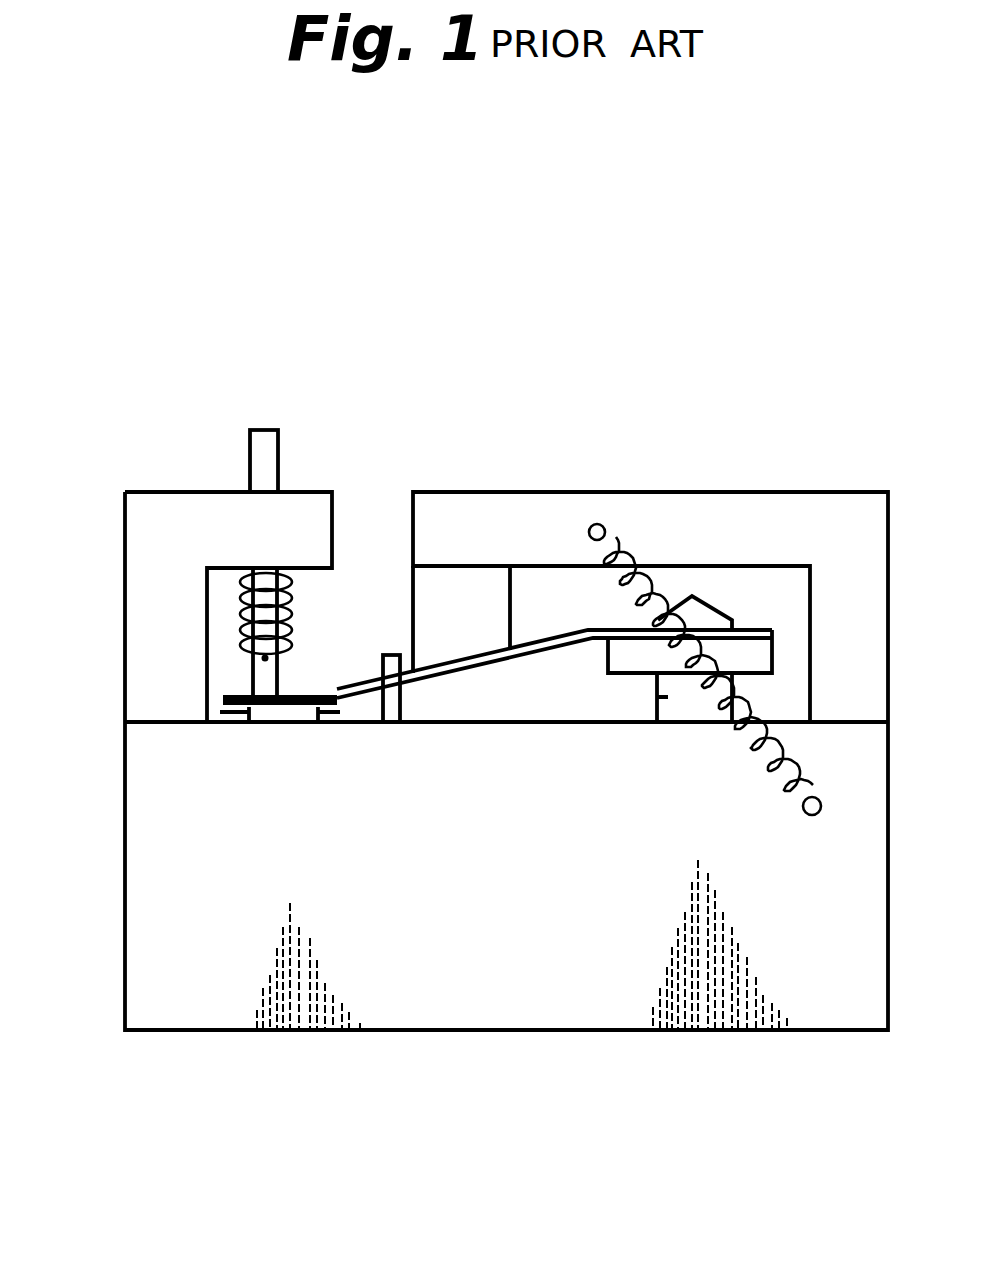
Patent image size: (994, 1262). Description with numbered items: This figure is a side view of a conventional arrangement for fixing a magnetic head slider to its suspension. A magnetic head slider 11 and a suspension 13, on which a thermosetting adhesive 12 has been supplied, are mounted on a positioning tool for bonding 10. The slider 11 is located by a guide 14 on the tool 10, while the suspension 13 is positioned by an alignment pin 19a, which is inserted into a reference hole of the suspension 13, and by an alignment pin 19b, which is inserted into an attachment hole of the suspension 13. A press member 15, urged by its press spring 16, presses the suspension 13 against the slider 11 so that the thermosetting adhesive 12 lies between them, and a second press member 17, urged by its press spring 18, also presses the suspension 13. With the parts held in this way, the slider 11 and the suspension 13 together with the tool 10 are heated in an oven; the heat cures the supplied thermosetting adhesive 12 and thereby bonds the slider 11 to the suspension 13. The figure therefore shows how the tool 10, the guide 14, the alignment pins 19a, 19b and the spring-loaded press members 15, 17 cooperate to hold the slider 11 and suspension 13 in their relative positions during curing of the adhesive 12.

The positioning tool for bonding 10 is at (490, 1005).
The magnetic head slider 11 is at (290, 715).
The thermosetting adhesive 12 is at (255, 722).
The suspension 13 is at (533, 655).
The guide 14 is at (325, 716).
The press member 15 is at (263, 677).
The press spring 16 is at (237, 612).
The press member 17 is at (427, 603).
The press spring 18 is at (637, 566).
The alignment pin 19a is at (400, 703).
The alignment pin 19b is at (657, 700).